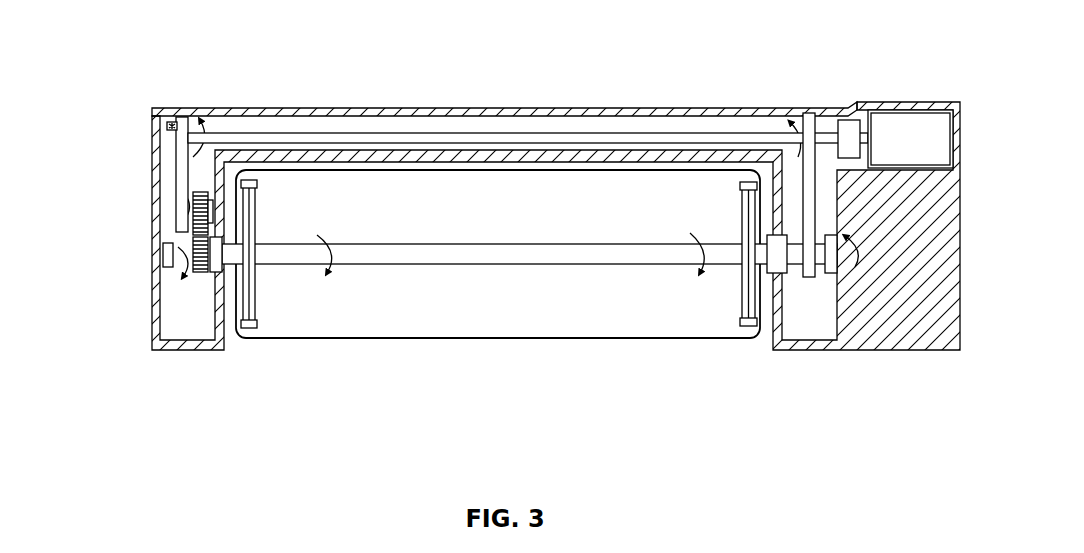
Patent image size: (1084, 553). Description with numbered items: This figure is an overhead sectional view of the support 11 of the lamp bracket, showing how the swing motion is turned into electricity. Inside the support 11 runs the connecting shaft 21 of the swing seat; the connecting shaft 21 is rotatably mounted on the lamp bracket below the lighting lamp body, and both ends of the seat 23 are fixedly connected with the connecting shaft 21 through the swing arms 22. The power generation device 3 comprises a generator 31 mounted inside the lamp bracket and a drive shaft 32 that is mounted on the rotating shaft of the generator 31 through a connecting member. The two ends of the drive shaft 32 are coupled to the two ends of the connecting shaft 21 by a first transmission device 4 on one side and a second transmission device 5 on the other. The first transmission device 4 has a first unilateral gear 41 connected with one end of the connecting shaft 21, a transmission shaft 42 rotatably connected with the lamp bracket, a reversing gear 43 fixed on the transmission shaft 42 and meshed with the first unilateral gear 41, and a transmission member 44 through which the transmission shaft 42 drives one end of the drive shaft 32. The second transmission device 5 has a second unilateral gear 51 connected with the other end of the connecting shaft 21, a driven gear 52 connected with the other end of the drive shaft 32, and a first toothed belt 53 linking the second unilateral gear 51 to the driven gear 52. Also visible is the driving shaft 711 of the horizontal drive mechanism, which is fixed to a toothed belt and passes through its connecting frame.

The support 11 is at (536, 107).
The connecting shaft 21 is at (500, 264).
The swing arms 22 is at (257, 298).
The seat 23 is at (408, 327).
The power generation device 3 is at (570, 92).
The generator 31 is at (910, 112).
The drive shaft 32 is at (826, 137).
The first transmission device 4 is at (127, 225).
The first unilateral gear 41 is at (145, 284).
The transmission shaft 42 is at (178, 230).
The reversing gear 43 is at (190, 222).
The transmission member 44 is at (176, 160).
The second transmission device 5 is at (753, 146).
The second unilateral gear 51 is at (797, 243).
The driven gear 52 is at (797, 116).
The first toothed belt 53 is at (797, 170).
The driving shaft 711 is at (165, 120).